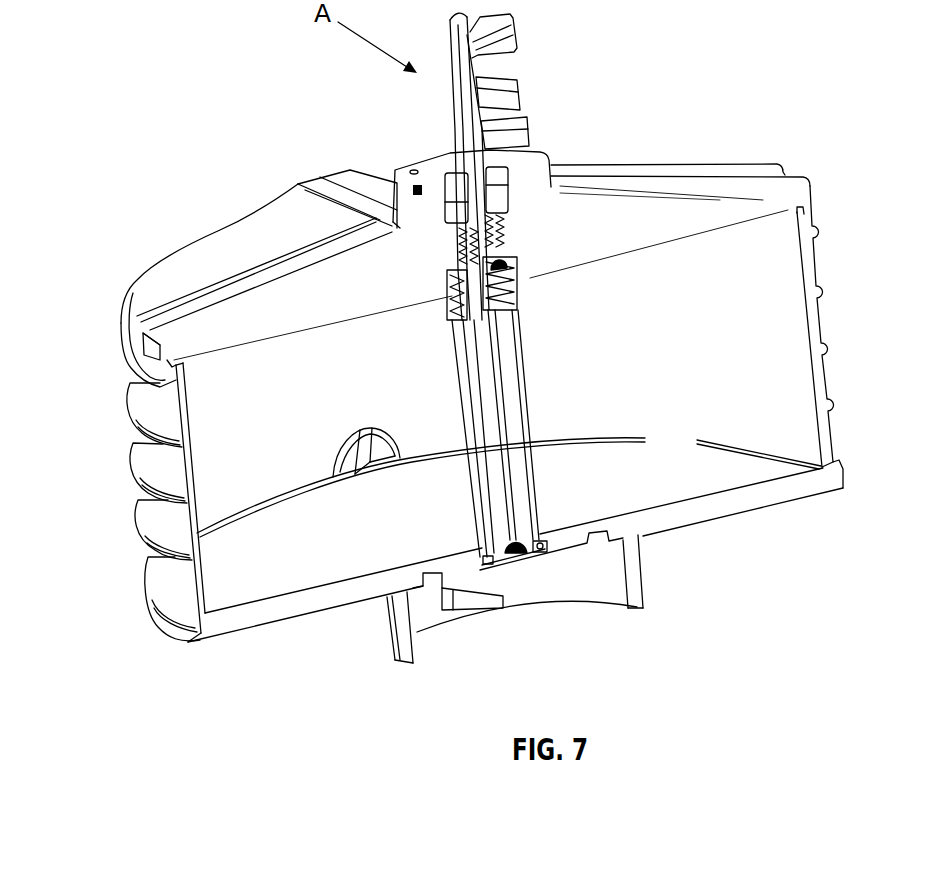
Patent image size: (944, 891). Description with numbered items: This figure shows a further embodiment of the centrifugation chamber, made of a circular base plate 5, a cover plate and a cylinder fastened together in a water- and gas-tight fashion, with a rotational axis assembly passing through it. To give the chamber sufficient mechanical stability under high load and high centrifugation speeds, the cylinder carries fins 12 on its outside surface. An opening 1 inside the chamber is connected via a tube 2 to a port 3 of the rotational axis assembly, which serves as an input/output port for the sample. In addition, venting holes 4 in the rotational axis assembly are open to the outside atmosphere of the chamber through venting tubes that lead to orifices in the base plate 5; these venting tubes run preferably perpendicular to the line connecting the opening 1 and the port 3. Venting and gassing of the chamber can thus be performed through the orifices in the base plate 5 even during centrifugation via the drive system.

The opening 1 is at (372, 452).
The tube 2 is at (535, 547).
The port 3 is at (524, 28).
The venting holes 4 is at (450, 320).
The base plate 5 is at (493, 567).
The fins 12 is at (106, 495).